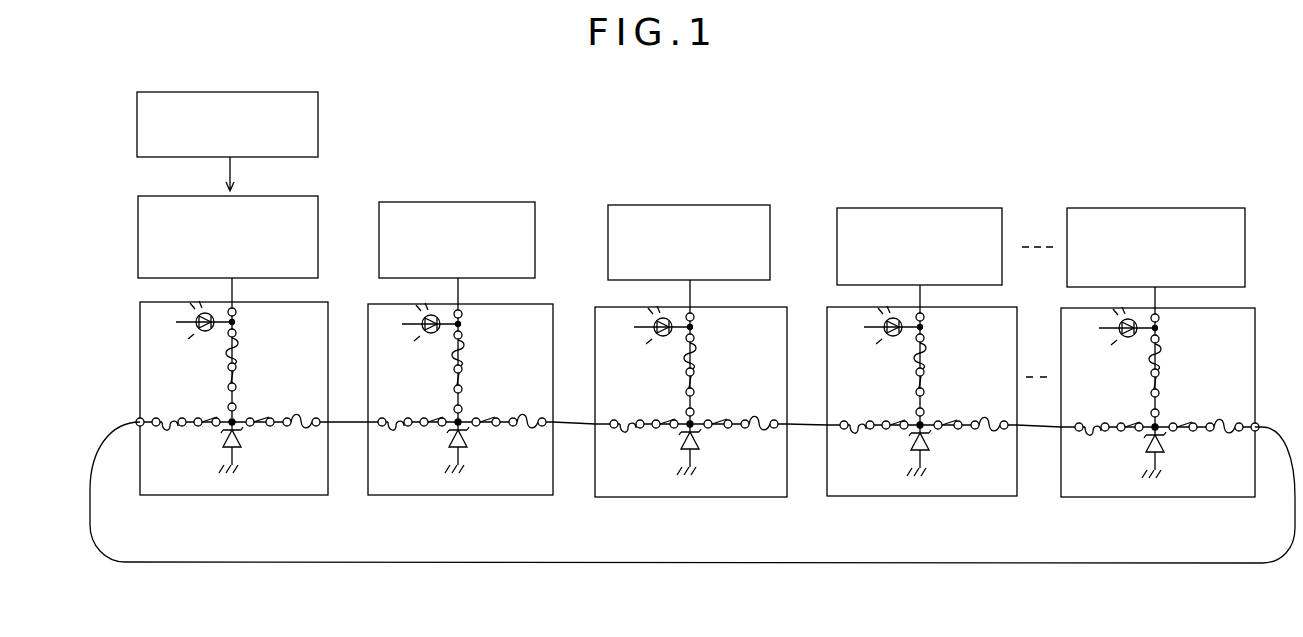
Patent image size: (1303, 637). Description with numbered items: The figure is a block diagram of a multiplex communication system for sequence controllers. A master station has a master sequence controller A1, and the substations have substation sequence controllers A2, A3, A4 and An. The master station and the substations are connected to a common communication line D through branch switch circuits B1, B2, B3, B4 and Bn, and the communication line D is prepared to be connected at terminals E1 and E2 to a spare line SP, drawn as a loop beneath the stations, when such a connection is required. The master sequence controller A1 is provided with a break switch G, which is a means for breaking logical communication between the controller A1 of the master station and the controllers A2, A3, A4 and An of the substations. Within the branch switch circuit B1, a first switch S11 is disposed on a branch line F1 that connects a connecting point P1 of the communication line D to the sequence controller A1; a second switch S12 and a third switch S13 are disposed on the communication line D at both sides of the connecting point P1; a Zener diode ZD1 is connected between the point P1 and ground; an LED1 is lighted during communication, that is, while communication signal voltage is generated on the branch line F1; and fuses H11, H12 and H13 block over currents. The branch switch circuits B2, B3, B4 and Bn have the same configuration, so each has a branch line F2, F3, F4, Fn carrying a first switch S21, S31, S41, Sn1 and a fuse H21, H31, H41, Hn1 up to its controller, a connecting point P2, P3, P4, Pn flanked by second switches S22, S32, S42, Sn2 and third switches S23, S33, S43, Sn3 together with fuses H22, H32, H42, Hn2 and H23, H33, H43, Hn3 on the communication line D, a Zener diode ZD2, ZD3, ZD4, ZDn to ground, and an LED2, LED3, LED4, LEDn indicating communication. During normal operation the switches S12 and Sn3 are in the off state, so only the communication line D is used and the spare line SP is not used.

The break switch G is at (318, 92).
The master sequence controller A1 is at (318, 196).
The substation sequence controller A2 is at (535, 202).
The substation sequence controller A3 is at (770, 205).
The substation sequence controller A4 is at (1002, 208).
The substation sequence controller An is at (1245, 208).
The branch switch circuit B1 is at (251, 379).
The branch switch circuit B2 is at (478, 380).
The branch switch circuit B3 is at (708, 382).
The branch switch circuit B4 is at (939, 382).
The branch switch circuit Bn is at (1175, 385).
The LED LED1 is at (198, 330).
The LED LED2 is at (424, 330).
The LED LED3 is at (656, 332).
The LED LED4 is at (886, 333).
The LED LEDn is at (1121, 335).
The fuse H11 is at (237, 351).
The fuse H21 is at (463, 351).
The fuse H31 is at (695, 353).
The fuse H41 is at (925, 354).
The fuse Hn1 is at (1163, 355).
The branch line F1 is at (236, 382).
The branch line F2 is at (462, 382).
The branch line F3 is at (694, 384).
The branch line F4 is at (924, 385).
The branch line Fn is at (1163, 388).
The first switch S11 is at (224, 387).
The first switch S21 is at (450, 387).
The first switch S31 is at (682, 389).
The first switch S41 is at (912, 390).
The first switch Sn1 is at (1147, 392).
The connecting point P1 is at (227, 419).
The connecting point P2 is at (453, 419).
The connecting point P3 is at (685, 421).
The connecting point P4 is at (915, 422).
The connecting point Pn is at (1149, 424).
The fuse H12 is at (170, 427).
The fuse H22 is at (396, 427).
The fuse H32 is at (628, 429).
The fuse H42 is at (858, 430).
The fuse Hn2 is at (1093, 432).
The fuse H13 is at (304, 411).
The fuse H23 is at (530, 411).
The fuse H33 is at (762, 413).
The fuse H43 is at (992, 414).
The fuse Hn3 is at (1227, 413).
The second switch S12 is at (208, 430).
The second switch S22 is at (434, 430).
The second switch S32 is at (666, 432).
The second switch S42 is at (896, 433).
The second switch Sn2 is at (1131, 435).
The third switch S13 is at (251, 428).
The third switch S23 is at (477, 428).
The third switch S33 is at (709, 430).
The third switch S43 is at (939, 431).
The third switch Sn3 is at (1176, 433).
The Zener diode ZD1 is at (244, 452).
The Zener diode ZD2 is at (470, 452).
The Zener diode ZD3 is at (702, 454).
The Zener diode ZD4 is at (932, 455).
The Zener diode ZDn is at (1172, 457).
The terminal E1 is at (140, 420).
The terminal E2 is at (1257, 426).
The communication line D is at (345, 421).
The spare line SP is at (338, 562).